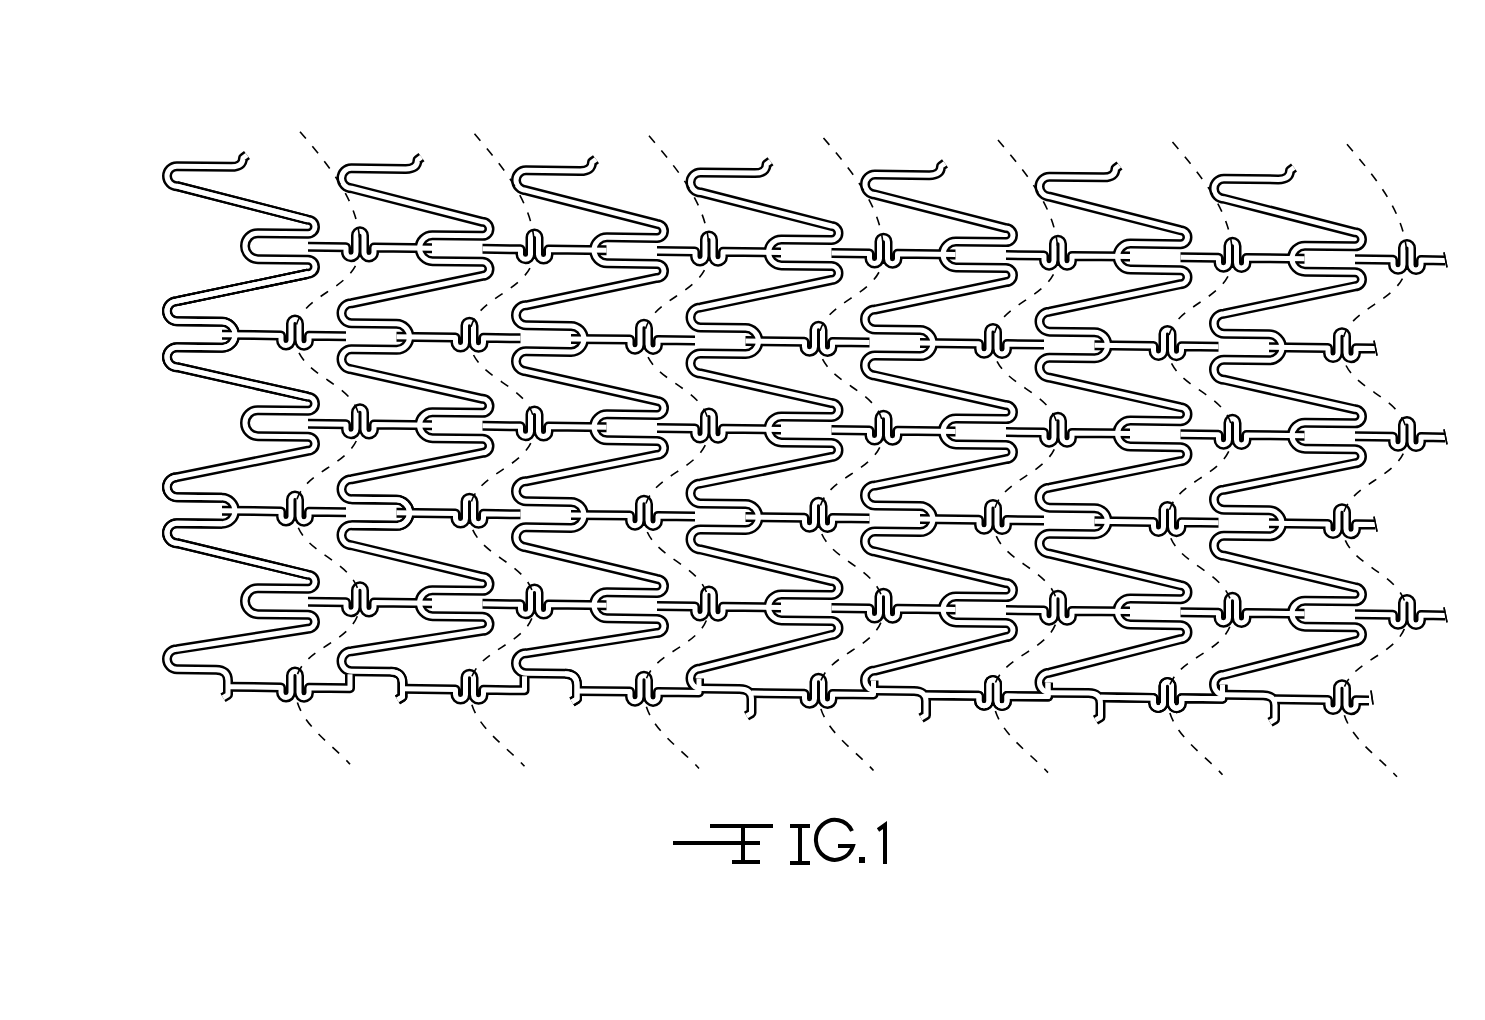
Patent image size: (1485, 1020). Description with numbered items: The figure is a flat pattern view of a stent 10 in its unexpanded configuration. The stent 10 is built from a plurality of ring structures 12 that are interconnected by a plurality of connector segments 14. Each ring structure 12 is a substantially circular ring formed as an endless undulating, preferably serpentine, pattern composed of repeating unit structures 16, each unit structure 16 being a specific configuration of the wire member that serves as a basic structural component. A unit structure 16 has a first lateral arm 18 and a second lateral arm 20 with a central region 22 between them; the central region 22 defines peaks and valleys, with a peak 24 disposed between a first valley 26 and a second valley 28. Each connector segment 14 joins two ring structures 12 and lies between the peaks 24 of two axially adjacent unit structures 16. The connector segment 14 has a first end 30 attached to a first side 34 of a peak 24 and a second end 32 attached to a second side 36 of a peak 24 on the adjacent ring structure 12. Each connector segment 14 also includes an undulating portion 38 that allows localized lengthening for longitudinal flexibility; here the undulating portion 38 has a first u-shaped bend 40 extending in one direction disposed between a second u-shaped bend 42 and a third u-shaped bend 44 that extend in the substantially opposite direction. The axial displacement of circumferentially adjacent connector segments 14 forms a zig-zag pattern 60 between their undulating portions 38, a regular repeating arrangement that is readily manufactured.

The stent 10 is at (777, 431).
The ring structure 12 is at (178, 160).
The connector segment 14 is at (356, 691).
The unit structure 16 is at (212, 203).
The first lateral arm 18 is at (240, 296).
The second lateral arm 20 is at (250, 390).
The central region 22 is at (157, 290).
The peak 24 is at (238, 495).
The first valley 26 is at (165, 488).
The second valley 28 is at (164, 532).
The first end 30 is at (412, 690).
The second end 32 is at (575, 697).
The first side 34 is at (235, 515).
The second side 36 is at (402, 496).
The undulating portion 38 is at (969, 702).
The first u-shaped bend 40 is at (1171, 660).
The second u-shaped bend 42 is at (1160, 700).
The third u-shaped bend 44 is at (1186, 702).
The zig-zag pattern 60 is at (692, 762).